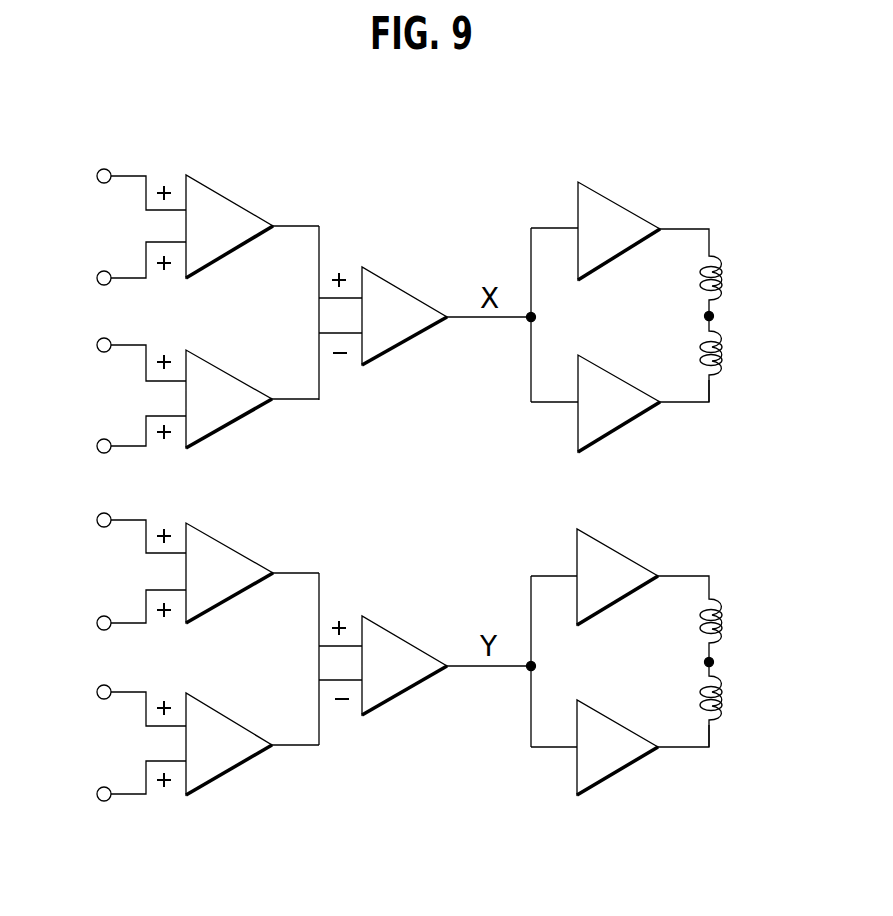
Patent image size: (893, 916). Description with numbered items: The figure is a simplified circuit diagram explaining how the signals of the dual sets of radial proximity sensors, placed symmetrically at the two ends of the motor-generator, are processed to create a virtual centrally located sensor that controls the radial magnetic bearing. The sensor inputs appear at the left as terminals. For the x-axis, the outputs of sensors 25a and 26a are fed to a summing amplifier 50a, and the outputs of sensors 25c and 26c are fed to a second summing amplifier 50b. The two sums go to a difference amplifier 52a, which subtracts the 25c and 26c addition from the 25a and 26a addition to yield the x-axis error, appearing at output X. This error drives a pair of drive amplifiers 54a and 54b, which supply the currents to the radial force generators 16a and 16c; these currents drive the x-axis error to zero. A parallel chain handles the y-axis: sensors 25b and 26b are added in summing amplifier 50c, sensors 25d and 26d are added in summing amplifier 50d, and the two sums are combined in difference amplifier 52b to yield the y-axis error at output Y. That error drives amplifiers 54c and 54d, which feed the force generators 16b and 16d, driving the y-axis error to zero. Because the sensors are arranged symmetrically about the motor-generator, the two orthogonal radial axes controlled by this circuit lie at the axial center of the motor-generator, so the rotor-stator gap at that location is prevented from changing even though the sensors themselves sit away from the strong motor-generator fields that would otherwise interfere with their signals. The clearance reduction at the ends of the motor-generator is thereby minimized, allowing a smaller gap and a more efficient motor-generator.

The radial proximity sensor 25a is at (107, 185).
The radial proximity sensor 26a is at (107, 269).
The radial proximity sensor 25b is at (107, 529).
The radial proximity sensor 26b is at (107, 615).
The radial proximity sensor 25c is at (107, 355).
The radial proximity sensor 26c is at (107, 440).
The radial proximity sensor 25d is at (107, 701).
The radial proximity sensor 26d is at (107, 786).
The summing amplifier 50a is at (237, 200).
The summing amplifier 50b is at (235, 372).
The summing amplifier 50c is at (223, 540).
The summing amplifier 50d is at (217, 712).
The difference amplifier 52a is at (395, 292).
The difference amplifier 52b is at (387, 627).
The drive amplifier 54a is at (627, 208).
The drive amplifier 54b is at (620, 386).
The drive amplifier 54c is at (612, 552).
The drive amplifier 54d is at (602, 713).
The force generator 16a is at (723, 262).
The force generator 16b is at (723, 607).
The force generator 16c is at (723, 340).
The force generator 16d is at (723, 690).